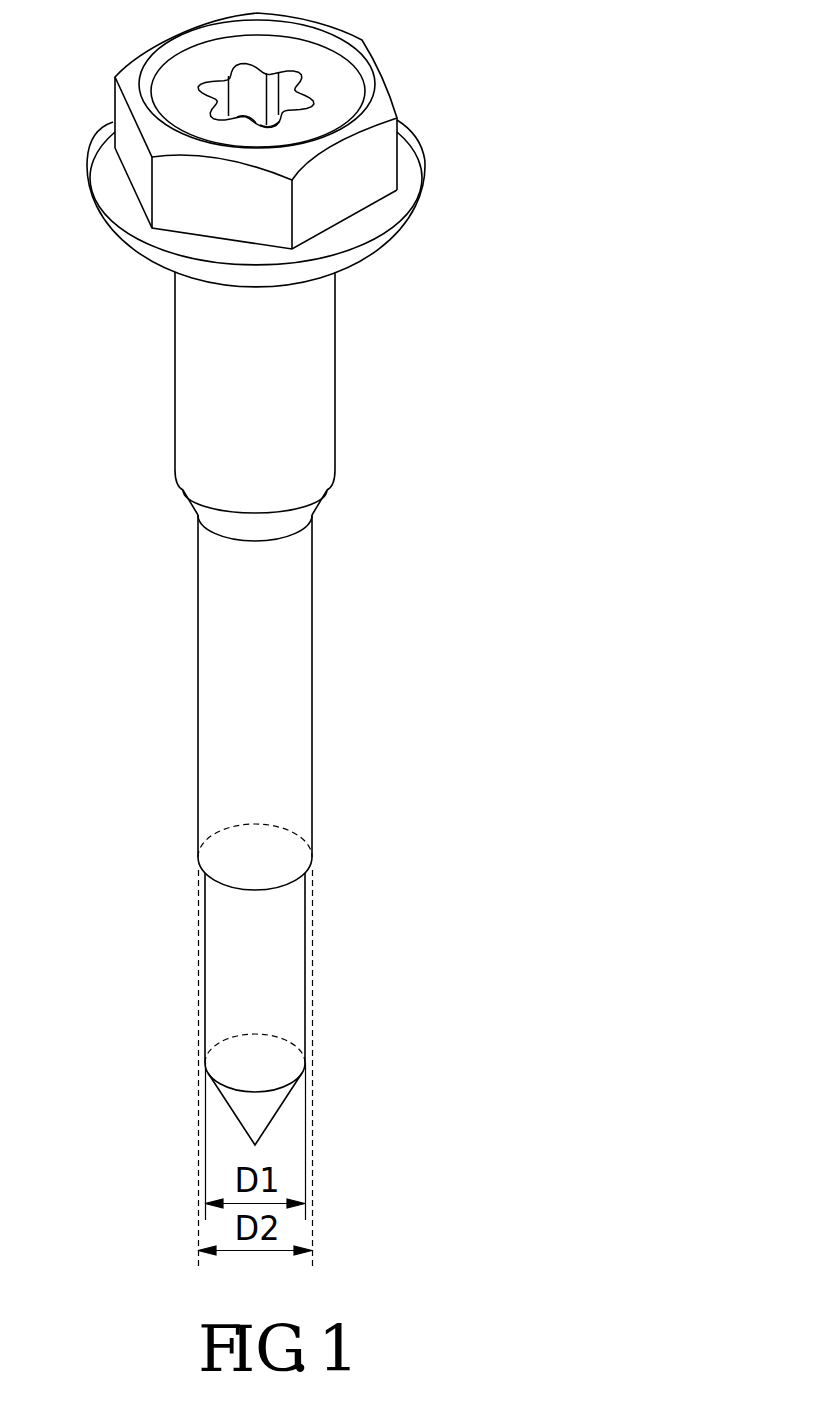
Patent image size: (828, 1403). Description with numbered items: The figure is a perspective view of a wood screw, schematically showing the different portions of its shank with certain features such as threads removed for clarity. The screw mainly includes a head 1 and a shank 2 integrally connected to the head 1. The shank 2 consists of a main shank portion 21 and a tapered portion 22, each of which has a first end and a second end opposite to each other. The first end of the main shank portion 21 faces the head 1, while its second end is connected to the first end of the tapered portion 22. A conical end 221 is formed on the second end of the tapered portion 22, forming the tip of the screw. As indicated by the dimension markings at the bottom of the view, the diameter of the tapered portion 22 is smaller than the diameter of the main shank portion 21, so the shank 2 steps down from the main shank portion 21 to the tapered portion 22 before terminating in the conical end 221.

The head 1 is at (373, 172).
The shank 2 is at (183, 615).
The main shank portion 21 is at (290, 735).
The tapered portion 22 is at (280, 945).
The conical end 221 is at (263, 1108).